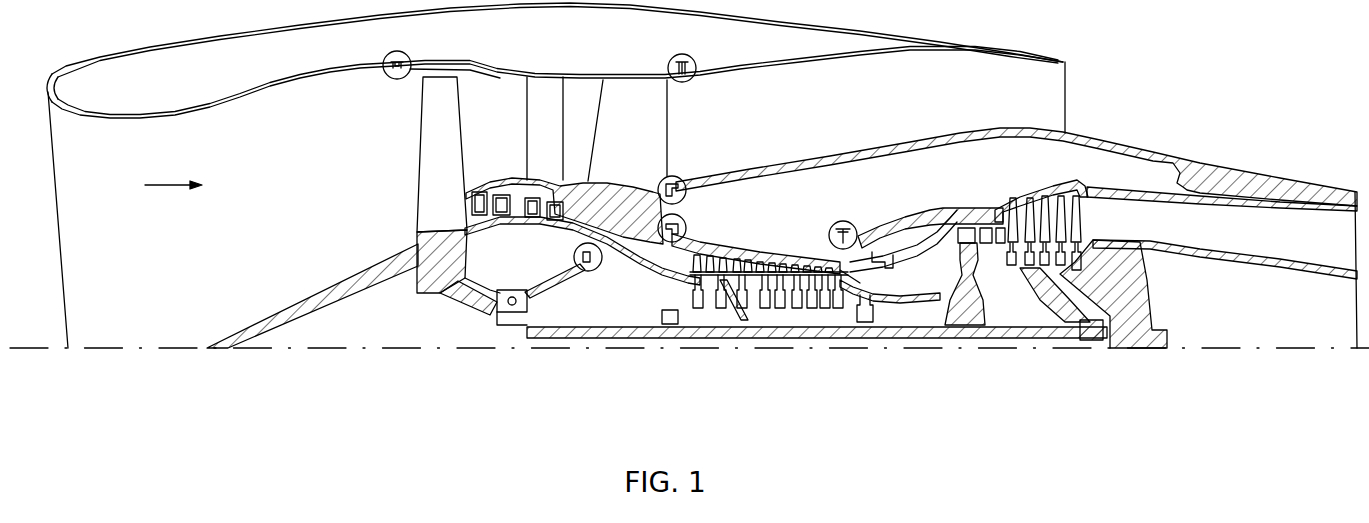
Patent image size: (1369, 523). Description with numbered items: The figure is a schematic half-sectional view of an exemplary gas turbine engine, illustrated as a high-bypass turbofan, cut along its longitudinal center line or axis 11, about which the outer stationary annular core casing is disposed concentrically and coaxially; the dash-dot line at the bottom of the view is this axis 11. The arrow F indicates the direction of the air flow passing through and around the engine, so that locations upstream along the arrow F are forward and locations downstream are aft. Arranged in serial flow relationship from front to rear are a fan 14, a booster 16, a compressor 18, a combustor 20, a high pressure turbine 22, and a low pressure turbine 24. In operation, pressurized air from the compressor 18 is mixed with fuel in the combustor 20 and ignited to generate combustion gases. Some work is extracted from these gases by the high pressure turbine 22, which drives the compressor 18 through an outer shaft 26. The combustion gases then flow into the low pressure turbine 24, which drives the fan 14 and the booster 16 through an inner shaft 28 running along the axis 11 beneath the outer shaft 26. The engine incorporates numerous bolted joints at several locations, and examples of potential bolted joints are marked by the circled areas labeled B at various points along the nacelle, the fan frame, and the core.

The longitudinal center line or axis 11 is at (378, 350).
The fan 14 is at (425, 164).
The booster 16 is at (499, 203).
The compressor 18 is at (722, 258).
The combustor 20 is at (919, 258).
The high pressure turbine 22 is at (967, 230).
The low pressure turbine 24 is at (1022, 222).
The outer shaft 26 is at (893, 296).
The inner shaft 28 is at (767, 334).
The circled areas of potential bolted joints B is at (858, 216).
The arrow indicating direction of air flow F is at (182, 185).